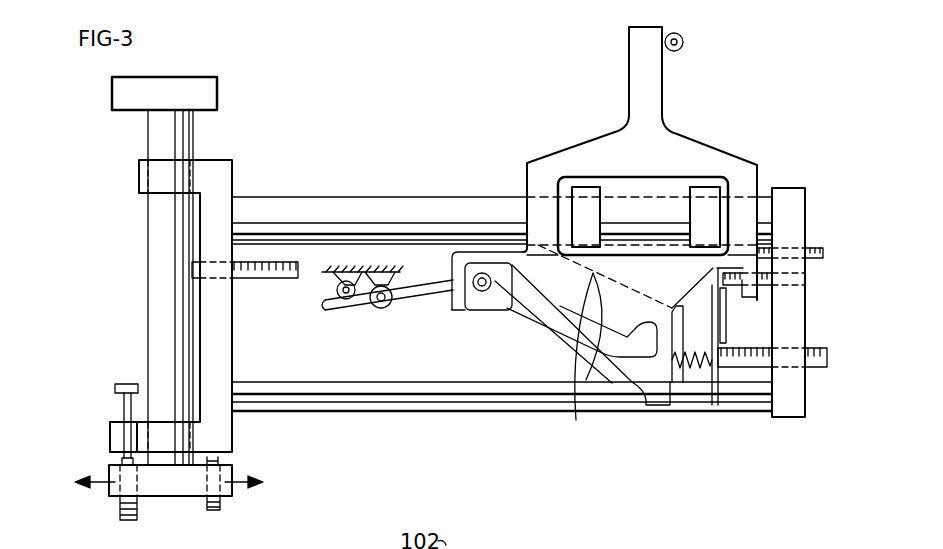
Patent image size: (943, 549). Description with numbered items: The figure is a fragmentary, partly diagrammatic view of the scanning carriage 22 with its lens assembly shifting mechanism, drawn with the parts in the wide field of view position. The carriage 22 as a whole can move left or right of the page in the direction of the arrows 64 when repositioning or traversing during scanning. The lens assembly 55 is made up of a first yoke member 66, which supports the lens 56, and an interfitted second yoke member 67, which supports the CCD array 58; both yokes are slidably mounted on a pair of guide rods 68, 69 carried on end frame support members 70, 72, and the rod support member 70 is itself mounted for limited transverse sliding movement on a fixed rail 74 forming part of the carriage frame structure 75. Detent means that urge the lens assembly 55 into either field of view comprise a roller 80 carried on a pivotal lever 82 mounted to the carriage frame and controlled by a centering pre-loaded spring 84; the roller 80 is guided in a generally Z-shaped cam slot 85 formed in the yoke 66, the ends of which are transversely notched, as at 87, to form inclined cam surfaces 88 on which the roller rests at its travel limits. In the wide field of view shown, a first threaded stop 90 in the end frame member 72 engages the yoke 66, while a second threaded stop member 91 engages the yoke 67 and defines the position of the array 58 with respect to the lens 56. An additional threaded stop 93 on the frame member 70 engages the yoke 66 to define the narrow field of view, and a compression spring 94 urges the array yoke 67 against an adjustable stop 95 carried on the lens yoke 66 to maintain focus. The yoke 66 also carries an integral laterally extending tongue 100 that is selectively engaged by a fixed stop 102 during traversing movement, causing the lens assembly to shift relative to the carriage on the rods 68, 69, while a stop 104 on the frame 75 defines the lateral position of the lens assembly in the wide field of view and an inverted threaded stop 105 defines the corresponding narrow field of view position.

The carriage 22 is at (366, 180).
The lens assembly 55 is at (546, 148).
The lens 56 is at (576, 420).
The CCD array 58 is at (727, 331).
The arrows 64 is at (109, 485).
The first yoke member 66 is at (685, 148).
The second yoke member 67 is at (698, 305).
The guide rod 68 is at (436, 197).
The guide rod 69 is at (482, 402).
The end frame support member 70 is at (232, 178).
The end frame support member 72 is at (783, 188).
The fixed rail 74 is at (150, 258).
The carriage frame structure 75 is at (170, 497).
The roller 80 is at (480, 293).
The pivotal lever 82 is at (396, 300).
The centering pre-loaded spring 84 is at (337, 317).
The Z-shaped cam slot 85 is at (565, 312).
The transverse notch 87 is at (652, 315).
The inclined cam surface 88 is at (490, 291).
The first threaded stop 90 is at (815, 245).
The second threaded stop member 91 is at (823, 367).
The threaded stop 93 is at (262, 279).
The compression spring 94 is at (700, 370).
The adjustable stop 95 is at (770, 280).
The tongue 100 is at (622, 44).
The fixed stop 102 is at (684, 42).
The stop 104 is at (215, 508).
The inverted threaded stop 105 is at (128, 383).